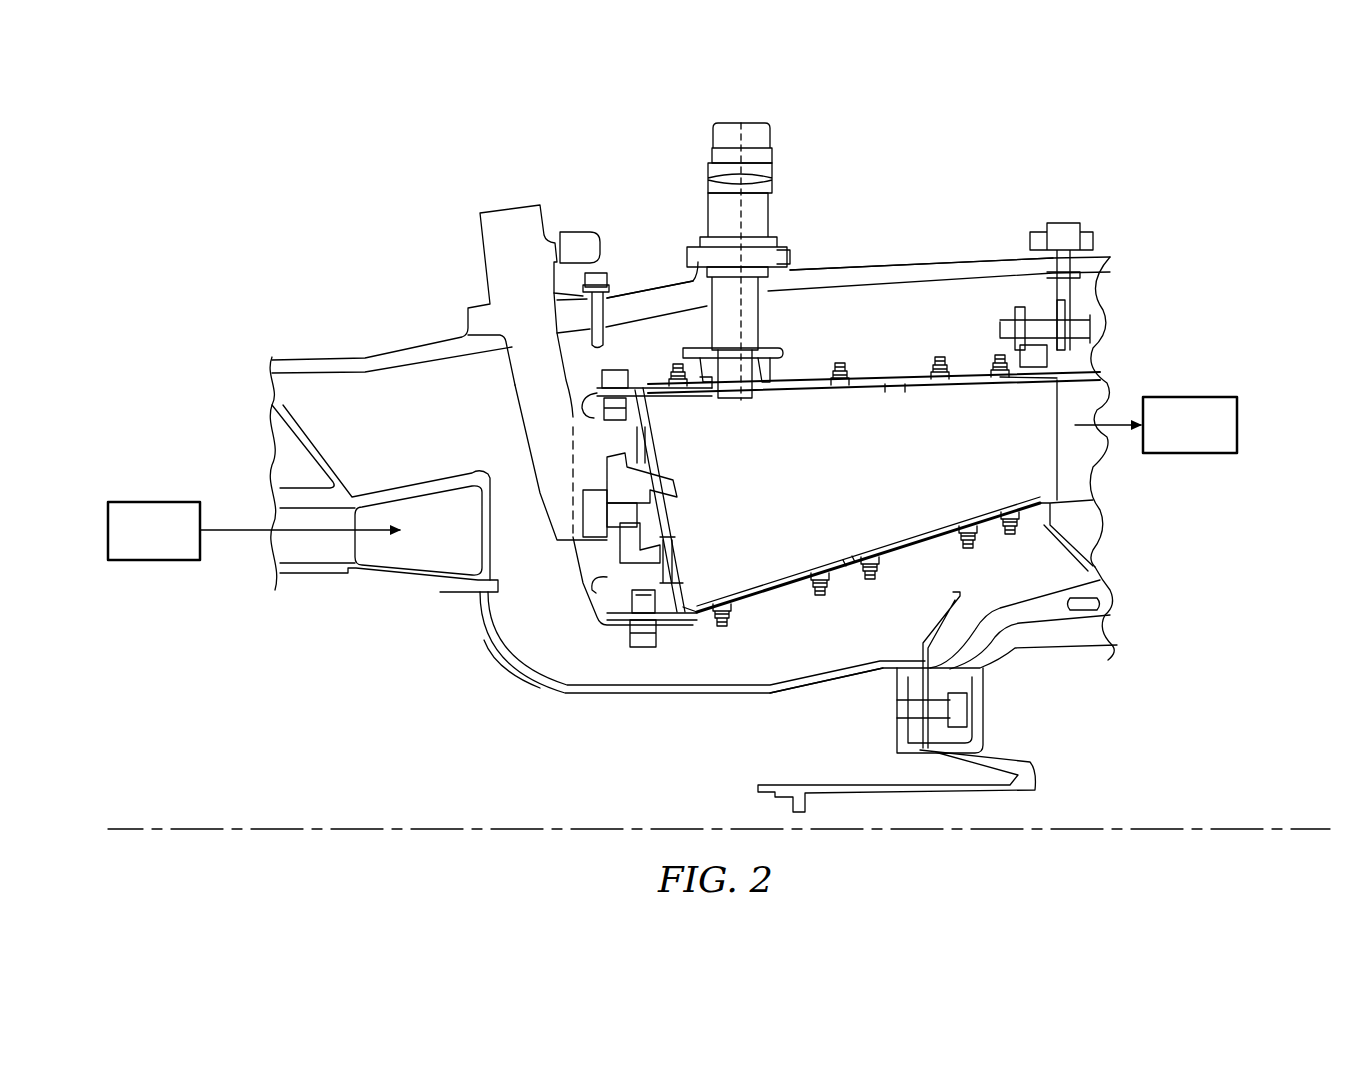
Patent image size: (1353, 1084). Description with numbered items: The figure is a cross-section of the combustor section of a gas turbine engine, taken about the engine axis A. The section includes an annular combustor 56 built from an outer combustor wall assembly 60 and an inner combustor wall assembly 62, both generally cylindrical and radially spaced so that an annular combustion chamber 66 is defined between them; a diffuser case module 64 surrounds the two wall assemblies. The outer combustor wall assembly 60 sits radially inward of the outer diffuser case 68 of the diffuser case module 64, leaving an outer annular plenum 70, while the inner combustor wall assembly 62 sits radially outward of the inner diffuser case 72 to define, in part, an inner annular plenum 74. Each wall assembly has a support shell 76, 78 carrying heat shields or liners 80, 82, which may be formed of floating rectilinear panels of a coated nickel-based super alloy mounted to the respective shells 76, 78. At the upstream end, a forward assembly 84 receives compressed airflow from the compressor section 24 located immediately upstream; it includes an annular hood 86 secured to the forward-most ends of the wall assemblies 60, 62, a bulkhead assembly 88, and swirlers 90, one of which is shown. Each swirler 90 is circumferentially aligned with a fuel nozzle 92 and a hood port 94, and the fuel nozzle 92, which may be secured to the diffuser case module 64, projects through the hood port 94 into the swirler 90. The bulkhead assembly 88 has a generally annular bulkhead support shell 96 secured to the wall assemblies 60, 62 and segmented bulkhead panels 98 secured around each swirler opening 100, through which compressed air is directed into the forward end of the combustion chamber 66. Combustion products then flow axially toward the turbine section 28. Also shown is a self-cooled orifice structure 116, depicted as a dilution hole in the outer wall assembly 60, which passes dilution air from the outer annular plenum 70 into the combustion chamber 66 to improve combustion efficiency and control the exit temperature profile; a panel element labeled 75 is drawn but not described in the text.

The compressor section 24 is at (170, 545).
The turbine section 28 is at (1204, 438).
The annular combustor 56 is at (989, 167).
The outer combustor wall assembly 60 is at (899, 371).
The inner combustor wall assembly 62 is at (847, 579).
The diffuser case module 64 is at (889, 256).
The annular combustion chamber 66 is at (884, 465).
The outer diffuser case 68 is at (822, 267).
The outer annular plenum 70 is at (834, 325).
The inner diffuser case 72 is at (716, 697).
The inner annular plenum 74 is at (810, 652).
The liner panel 75 is at (1015, 528).
The support shell 76 is at (862, 385).
The support shell 78 is at (935, 543).
The liner 80 is at (771, 396).
The liner 82 is at (775, 570).
The forward assembly 84 is at (590, 637).
The annular hood 86 is at (590, 597).
The bulkhead assembly 88 is at (671, 445).
The swirler 90 is at (684, 541).
The fuel nozzle 92 is at (548, 348).
The hood port 94 is at (600, 577).
The bulkhead support shell 96 is at (665, 565).
The bulkhead heat shield panel 98 is at (690, 568).
The swirler opening 100 is at (680, 500).
The self-cooled orifice structure 116 is at (890, 395).
The engine axis A is at (1225, 829).